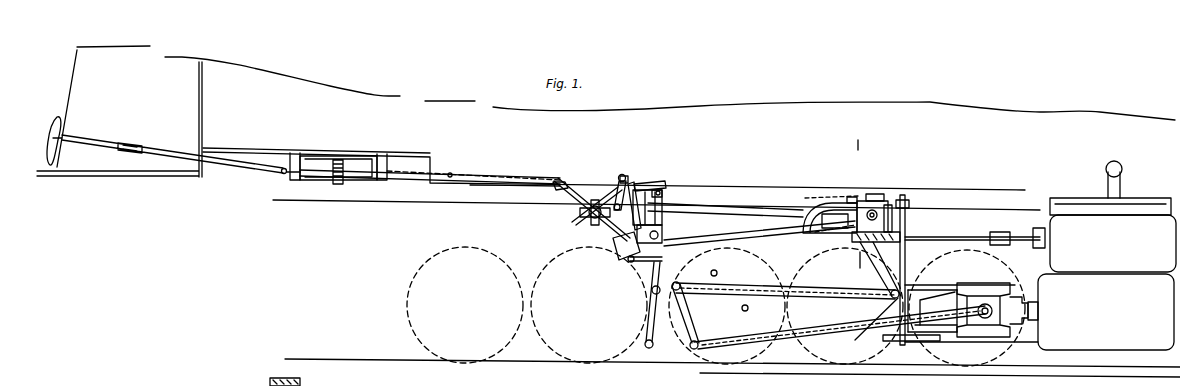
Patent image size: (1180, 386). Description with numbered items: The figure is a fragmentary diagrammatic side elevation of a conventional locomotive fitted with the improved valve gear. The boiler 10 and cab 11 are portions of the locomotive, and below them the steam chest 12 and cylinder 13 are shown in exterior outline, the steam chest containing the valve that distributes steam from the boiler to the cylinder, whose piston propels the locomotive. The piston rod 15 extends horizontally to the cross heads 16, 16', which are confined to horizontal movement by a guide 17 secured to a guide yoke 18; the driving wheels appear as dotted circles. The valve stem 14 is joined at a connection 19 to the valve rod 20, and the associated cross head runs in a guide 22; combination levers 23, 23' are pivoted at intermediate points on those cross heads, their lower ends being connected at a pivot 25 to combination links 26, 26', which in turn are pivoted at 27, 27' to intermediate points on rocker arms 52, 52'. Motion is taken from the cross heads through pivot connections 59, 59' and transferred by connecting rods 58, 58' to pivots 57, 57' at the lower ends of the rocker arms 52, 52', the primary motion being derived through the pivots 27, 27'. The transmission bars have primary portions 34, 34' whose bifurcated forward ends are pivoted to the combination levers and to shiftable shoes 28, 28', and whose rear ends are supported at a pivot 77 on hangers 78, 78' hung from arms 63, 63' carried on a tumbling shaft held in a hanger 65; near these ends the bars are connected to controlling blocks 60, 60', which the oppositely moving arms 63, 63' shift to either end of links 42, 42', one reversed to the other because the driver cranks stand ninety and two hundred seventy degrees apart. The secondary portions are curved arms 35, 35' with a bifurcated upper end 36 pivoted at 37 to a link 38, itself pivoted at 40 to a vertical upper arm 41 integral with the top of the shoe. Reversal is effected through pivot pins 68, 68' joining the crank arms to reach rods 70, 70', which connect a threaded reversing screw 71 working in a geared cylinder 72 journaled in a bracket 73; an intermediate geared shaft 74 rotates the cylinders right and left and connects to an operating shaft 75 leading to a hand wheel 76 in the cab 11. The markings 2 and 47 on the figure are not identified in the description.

The section line 2- 2 is at (857, 198).
The boiler 10 is at (757, 113).
The cab 11 is at (119, 113).
The steam chest 12 is at (1113, 216).
The cylinder 13 is at (1106, 312).
The valve stem 14 is at (1026, 244).
The piston rod 15 is at (1040, 320).
The cross head 16 is at (1020, 329).
The cross head 16' is at (911, 349).
The guide 17 is at (968, 350).
The guide yoke 18 is at (932, 291).
The connection 19 is at (997, 232).
The valve rod 20 is at (958, 236).
The guide 22 is at (899, 234).
The combination lever 23 is at (898, 268).
The combination lever 23' is at (867, 284).
The pivotal connection 25 is at (872, 330).
The combination link 26 is at (785, 277).
The combination link 26' is at (727, 314).
The pivot 27 is at (694, 277).
The pivot 27' is at (625, 293).
The shiftable shoe 28 is at (895, 191).
The shiftable shoe 28' is at (832, 239).
The primary portion of transmission bar 34 is at (759, 232).
The primary portion of transmission bar 34' is at (725, 217).
The curved arm 35 is at (825, 199).
The curved arm 35' is at (819, 173).
The bifurcated upper end 36 is at (851, 197).
The pivot 37 is at (828, 203).
The link 38 is at (862, 201).
The pivotal connection 40 is at (876, 194).
The upper arm 41 is at (888, 205).
The link 42 is at (648, 190).
The link 42' is at (680, 178).
The pivot pin 47 is at (660, 237).
The rocker arm 52 is at (696, 313).
The rocker arm 52' is at (629, 302).
The pivot connection 57 is at (689, 363).
The pivot connection 57' is at (646, 363).
The connecting rod 58 is at (839, 332).
The connecting rod 58' is at (841, 318).
The pivot connection 59 is at (1025, 303).
The pivot connection 59' is at (983, 294).
The controlling block 60 is at (671, 241).
The controlling block 60' is at (660, 170).
The arm 63 is at (575, 216).
The arm 63' is at (604, 179).
The bearing or hanger 65 is at (588, 216).
The pivot pin 68 is at (618, 156).
The pivot pin 68' is at (542, 192).
The reach rod 70 is at (473, 159).
The reach rod 70' is at (515, 203).
The threaded reversing screw 71 is at (405, 176).
The geared cylinder 72 is at (314, 166).
The bracket 73 is at (296, 151).
The intermediate geared shaft 74 is at (281, 174).
The operating shaft 75 is at (160, 151).
The hand wheel 76 is at (65, 115).
The pivot 77 is at (630, 260).
The hanger 78 is at (605, 246).
The hanger 78' is at (642, 185).